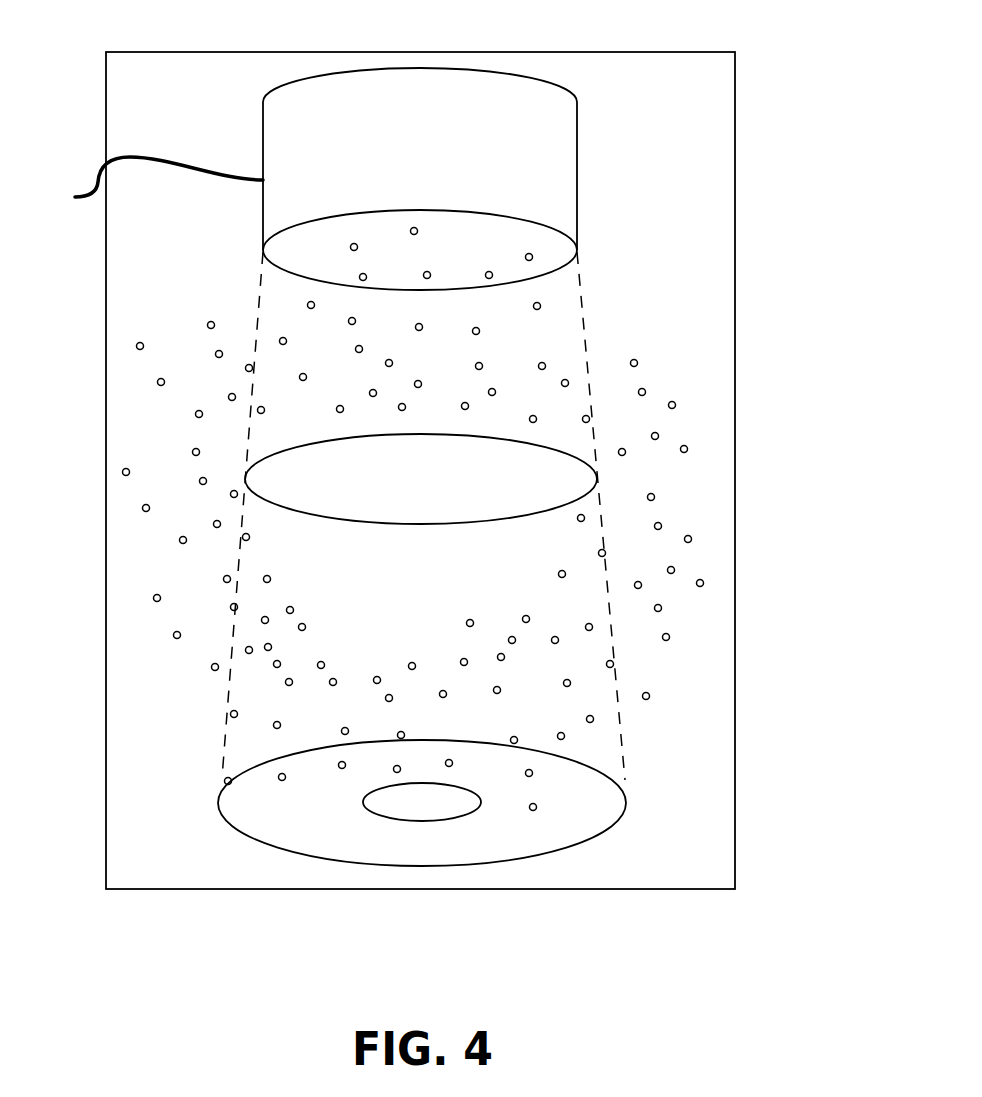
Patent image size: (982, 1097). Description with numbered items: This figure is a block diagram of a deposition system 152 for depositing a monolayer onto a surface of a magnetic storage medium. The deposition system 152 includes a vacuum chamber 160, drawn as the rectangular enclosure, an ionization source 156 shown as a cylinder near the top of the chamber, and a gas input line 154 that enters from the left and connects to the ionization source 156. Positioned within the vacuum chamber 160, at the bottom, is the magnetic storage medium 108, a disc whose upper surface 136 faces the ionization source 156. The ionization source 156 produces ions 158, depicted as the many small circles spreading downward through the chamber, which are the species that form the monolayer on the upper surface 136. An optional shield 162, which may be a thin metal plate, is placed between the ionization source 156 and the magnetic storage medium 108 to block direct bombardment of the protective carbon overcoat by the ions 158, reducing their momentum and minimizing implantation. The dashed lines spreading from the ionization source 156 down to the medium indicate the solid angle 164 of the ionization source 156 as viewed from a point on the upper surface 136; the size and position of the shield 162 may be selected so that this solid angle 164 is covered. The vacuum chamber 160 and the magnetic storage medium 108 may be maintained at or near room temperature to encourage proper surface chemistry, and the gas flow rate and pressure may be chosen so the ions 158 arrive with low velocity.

The deposition system 152 is at (742, 64).
The gas input line 154 is at (130, 156).
The ionization source 156 is at (420, 179).
The ions 158 is at (749, 286).
The vacuum chamber 160 is at (106, 458).
The shield 162 is at (256, 464).
The solid angle 164 is at (258, 286).
The upper surface 136 is at (577, 776).
The magnetic storage medium 108 is at (627, 802).